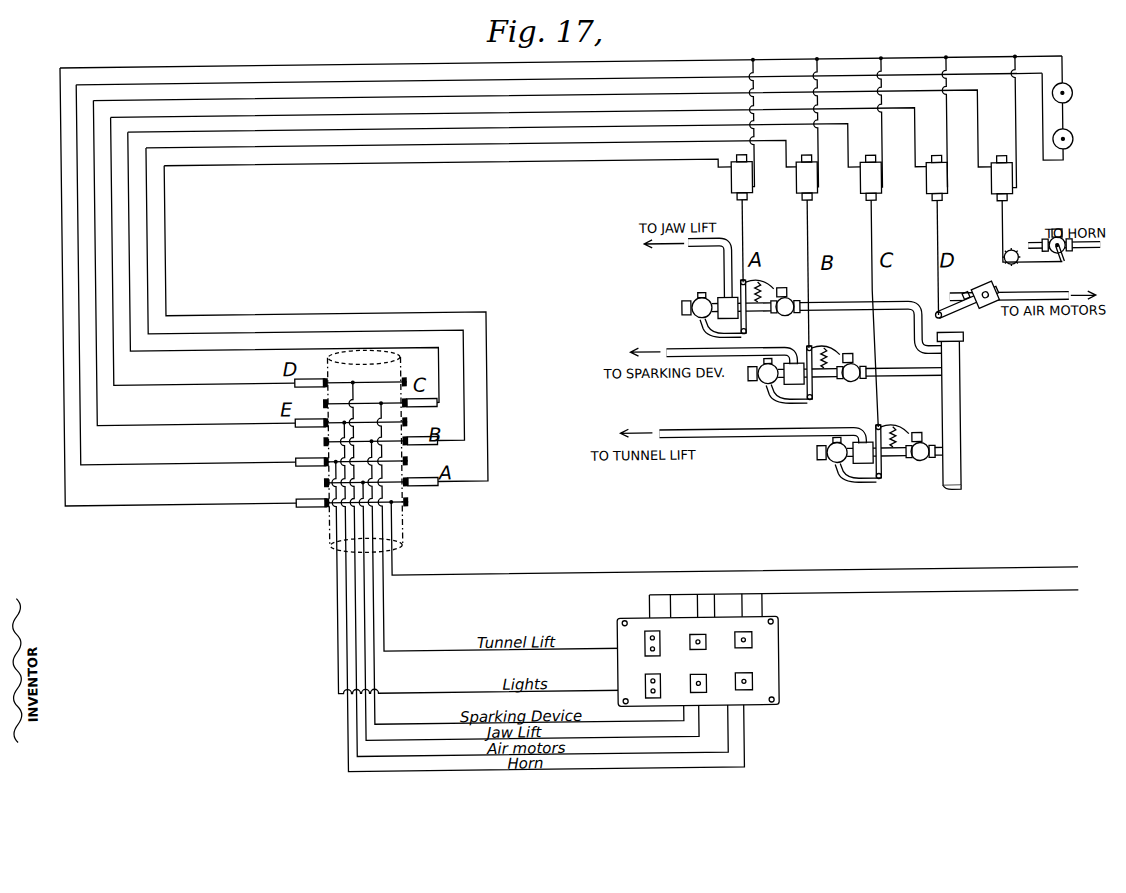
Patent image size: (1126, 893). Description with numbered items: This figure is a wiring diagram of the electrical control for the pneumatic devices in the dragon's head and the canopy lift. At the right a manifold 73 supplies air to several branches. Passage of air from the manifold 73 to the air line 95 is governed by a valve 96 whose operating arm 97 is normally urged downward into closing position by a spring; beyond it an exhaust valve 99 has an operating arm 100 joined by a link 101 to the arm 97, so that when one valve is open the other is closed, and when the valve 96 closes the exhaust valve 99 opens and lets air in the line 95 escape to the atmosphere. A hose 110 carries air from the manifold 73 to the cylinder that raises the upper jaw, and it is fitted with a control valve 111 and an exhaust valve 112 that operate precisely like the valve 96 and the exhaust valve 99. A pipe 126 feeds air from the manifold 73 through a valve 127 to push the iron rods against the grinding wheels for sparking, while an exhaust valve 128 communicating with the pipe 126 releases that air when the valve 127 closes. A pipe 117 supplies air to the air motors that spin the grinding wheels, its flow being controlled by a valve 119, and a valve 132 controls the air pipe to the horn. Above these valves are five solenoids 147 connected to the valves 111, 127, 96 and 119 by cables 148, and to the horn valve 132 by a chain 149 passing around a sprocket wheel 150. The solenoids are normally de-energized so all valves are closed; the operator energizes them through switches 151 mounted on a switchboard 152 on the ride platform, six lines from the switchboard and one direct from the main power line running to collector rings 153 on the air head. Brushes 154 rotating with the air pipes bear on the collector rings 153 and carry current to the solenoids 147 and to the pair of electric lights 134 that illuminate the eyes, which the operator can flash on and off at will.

The manifold 73 is at (958, 393).
The air line 95 is at (816, 432).
The valve 96 is at (925, 478).
The operating arm 97 is at (881, 442).
The exhaust valve 99 is at (829, 477).
The operating arm 100 is at (855, 497).
The link 101 is at (877, 489).
The hose 110 is at (718, 258).
The control valve 111 is at (779, 296).
The exhaust valve 112 is at (701, 305).
The pipe 117 is at (1048, 303).
The valve 119 is at (985, 320).
The pipe 126 is at (688, 346).
The valve 127 is at (848, 364).
The exhaust valve 128 is at (774, 364).
The valve 132 is at (1063, 269).
The electric lights 134 is at (1069, 100).
The solenoids 147 is at (732, 188).
The cables 148 is at (743, 253).
The chain 149 is at (1003, 226).
The sprocket wheel 150 is at (1002, 271).
The switches 151 is at (745, 648).
The switchboard 152 is at (772, 676).
The collector rings 153 is at (405, 506).
The brushes 154 is at (309, 514).